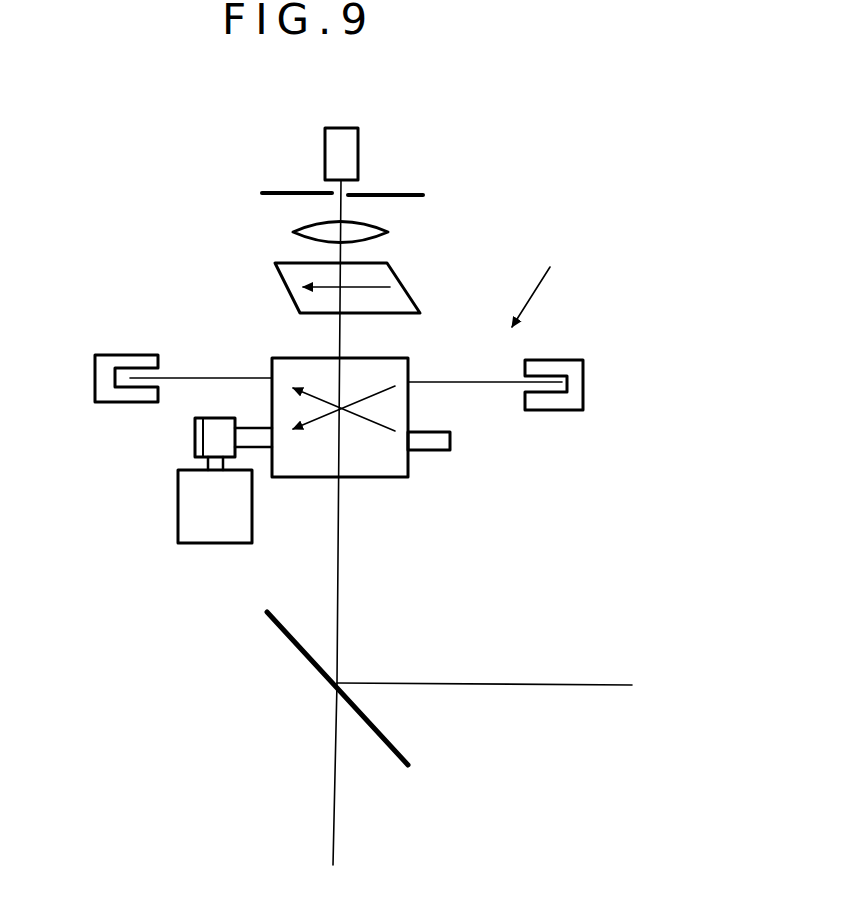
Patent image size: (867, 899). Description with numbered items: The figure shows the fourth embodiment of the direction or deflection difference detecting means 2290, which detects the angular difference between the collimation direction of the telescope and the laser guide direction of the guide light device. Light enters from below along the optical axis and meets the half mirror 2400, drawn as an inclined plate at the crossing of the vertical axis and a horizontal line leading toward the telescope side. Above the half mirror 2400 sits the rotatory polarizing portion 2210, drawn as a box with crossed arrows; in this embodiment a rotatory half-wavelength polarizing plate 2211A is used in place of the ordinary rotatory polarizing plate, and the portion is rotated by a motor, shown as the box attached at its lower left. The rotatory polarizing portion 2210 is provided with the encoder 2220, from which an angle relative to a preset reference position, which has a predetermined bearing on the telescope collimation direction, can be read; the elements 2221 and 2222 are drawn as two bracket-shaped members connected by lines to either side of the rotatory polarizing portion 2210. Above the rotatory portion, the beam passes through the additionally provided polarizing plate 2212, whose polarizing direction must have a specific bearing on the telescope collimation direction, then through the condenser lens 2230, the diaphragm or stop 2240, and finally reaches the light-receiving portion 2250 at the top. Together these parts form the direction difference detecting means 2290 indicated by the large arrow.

The light-receiving portion 2250 is at (345, 153).
The diaphragm or stop 2240 is at (393, 190).
The condenser lens 2230 is at (385, 230).
The polarizing plate 2212 is at (398, 302).
The direction difference detecting means 2290 is at (573, 248).
The rotatory polarizing portion 2210 is at (393, 463).
The rotatory half-wavelength polarizing plate 2211A is at (397, 408).
The encoder 2220 is at (253, 367).
The left clamp 2221 is at (105, 393).
The right clamp 2222 is at (583, 388).
The half mirror 2400 is at (283, 620).